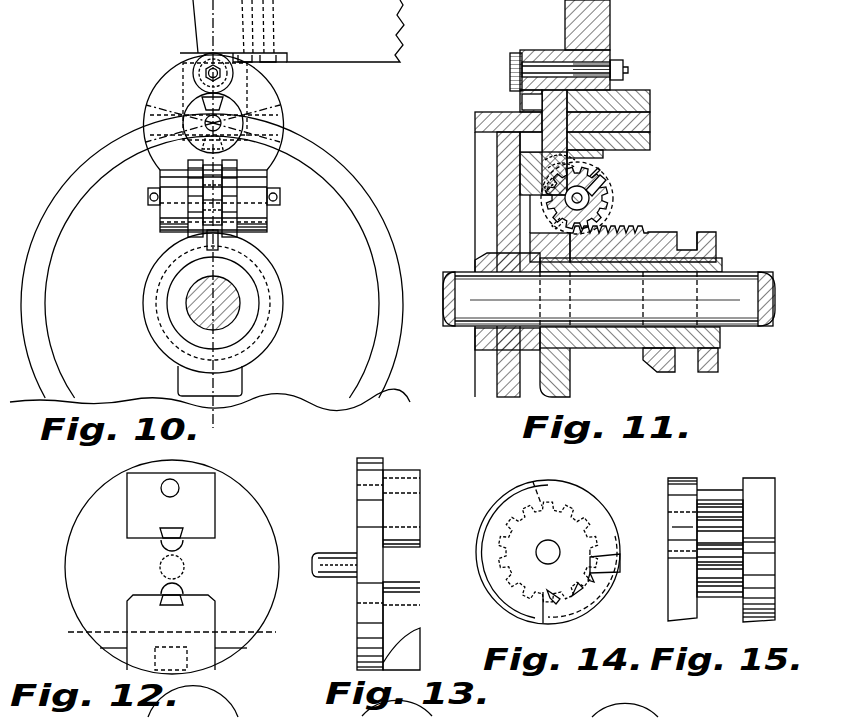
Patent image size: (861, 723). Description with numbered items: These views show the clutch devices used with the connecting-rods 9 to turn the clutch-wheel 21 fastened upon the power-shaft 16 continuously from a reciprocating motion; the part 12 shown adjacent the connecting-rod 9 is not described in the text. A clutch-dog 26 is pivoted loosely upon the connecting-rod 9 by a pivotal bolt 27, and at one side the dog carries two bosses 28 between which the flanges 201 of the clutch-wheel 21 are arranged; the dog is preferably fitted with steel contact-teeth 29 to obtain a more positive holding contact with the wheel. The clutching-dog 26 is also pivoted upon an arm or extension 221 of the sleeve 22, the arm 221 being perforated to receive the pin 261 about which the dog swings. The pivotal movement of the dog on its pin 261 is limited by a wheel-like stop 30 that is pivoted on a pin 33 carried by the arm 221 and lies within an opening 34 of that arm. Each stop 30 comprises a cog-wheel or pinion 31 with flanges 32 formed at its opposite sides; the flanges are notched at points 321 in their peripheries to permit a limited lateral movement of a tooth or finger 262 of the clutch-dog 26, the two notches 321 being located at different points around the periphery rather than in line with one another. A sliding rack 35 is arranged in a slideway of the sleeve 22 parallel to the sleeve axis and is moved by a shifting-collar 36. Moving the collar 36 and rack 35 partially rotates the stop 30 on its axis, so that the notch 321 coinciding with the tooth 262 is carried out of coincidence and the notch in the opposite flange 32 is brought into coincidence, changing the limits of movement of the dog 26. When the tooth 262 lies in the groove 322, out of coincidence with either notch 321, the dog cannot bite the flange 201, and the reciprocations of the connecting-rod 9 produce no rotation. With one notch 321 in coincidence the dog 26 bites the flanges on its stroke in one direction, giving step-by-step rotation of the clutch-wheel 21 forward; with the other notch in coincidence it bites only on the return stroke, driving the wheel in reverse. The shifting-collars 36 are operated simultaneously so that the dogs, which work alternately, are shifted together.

In FIG. 10, the connecting-rod 9 is at (266, 27).
In FIG. 11, the connecting-rod 9 is at (610, 17).
In FIG. 10, the bracket 12 is at (255, 72).
In FIG. 11, the bracket 12 is at (612, 52).
In FIG. 10, the power-shaft 16 is at (236, 303).
In FIG. 11, the power-shaft 16 is at (775, 302).
In FIG. 10, the clutch-wheel 21 is at (210, 379).
In FIG. 11, the clutch-wheel 21 is at (480, 261).
In FIG. 10, the sleeve 22 is at (250, 311).
In FIG. 11, the sleeve 22 is at (722, 270).
In FIG. 10, the clutch-dog 26 is at (156, 91).
In FIG. 11, the clutch-dog 26 is at (522, 92).
In FIG. 12, the clutch-dog 26 is at (172, 567).
In FIG. 13, the clutch-dog 26 is at (360, 613).
In FIG. 10, the pivotal bolt 27 is at (212, 73).
In FIG. 11, the pivotal bolt 27 is at (628, 70).
In FIG. 12, the pivotal bolt 27 is at (176, 486).
In FIG. 11, the boss 28 is at (531, 52).
In FIG. 12, the boss 28 is at (171, 571).
In FIG. 13, the boss 28 is at (401, 570).
In FIG. 11, the contact-tooth 29 is at (524, 103).
In FIG. 12, the contact-tooth 29 is at (184, 541).
In FIG. 13, the contact-tooth 29 is at (421, 541).
In FIG. 11, the wheel-like stop 30 is at (600, 200).
In FIG. 14, the wheel-like stop 30 is at (604, 502).
In FIG. 15, the wheel-like stop 30 is at (720, 529).
In FIG. 10, the cog-wheel or pinion 31 is at (196, 218).
In FIG. 11, the cog-wheel or pinion 31 is at (598, 195).
In FIG. 14, the cog-wheel or pinion 31 is at (592, 574).
In FIG. 15, the cog-wheel or pinion 31 is at (723, 557).
In FIG. 10, the flange 32 is at (240, 228).
In FIG. 11, the flange 32 is at (600, 212).
In FIG. 14, the flange 32 is at (616, 526).
In FIG. 15, the flange 32 is at (776, 560).
In FIG. 10, the pin 33 is at (280, 197).
In FIG. 11, the pin 33 is at (590, 189).
In FIG. 10, the opening 34 is at (237, 195).
In FIG. 11, the opening 34 is at (522, 158).
In FIG. 10, the sliding rack 35 is at (240, 247).
In FIG. 11, the sliding rack 35 is at (650, 230).
In FIG. 10, the shifting-collar 36 is at (272, 336).
In FIG. 11, the shifting-collar 36 is at (708, 234).
In FIG. 10, the flange of the clutch-wheel 201 is at (40, 313).
In FIG. 11, the flange of the clutch-wheel 201 is at (518, 118).
In FIG. 10, the arm or extension of the sleeve 221 is at (167, 206).
In FIG. 11, the arm or extension of the sleeve 221 is at (650, 96).
In FIG. 10, the pin 261 is at (250, 113).
In FIG. 11, the pin 261 is at (652, 120).
In FIG. 12, the pin 261 is at (162, 571).
In FIG. 13, the pin 261 is at (334, 569).
In FIG. 11, the tooth or finger of the clutch-dog 262 is at (505, 190).
In FIG. 12, the tooth or finger of the clutch-dog 262 is at (188, 660).
In FIG. 13, the tooth or finger of the clutch-dog 262 is at (414, 643).
In FIG. 11, the notch 321 is at (600, 176).
In FIG. 14, the notch 321 is at (582, 605).
In FIG. 15, the notch 321 is at (766, 507).
In FIG. 15, the groove 322 is at (722, 544).